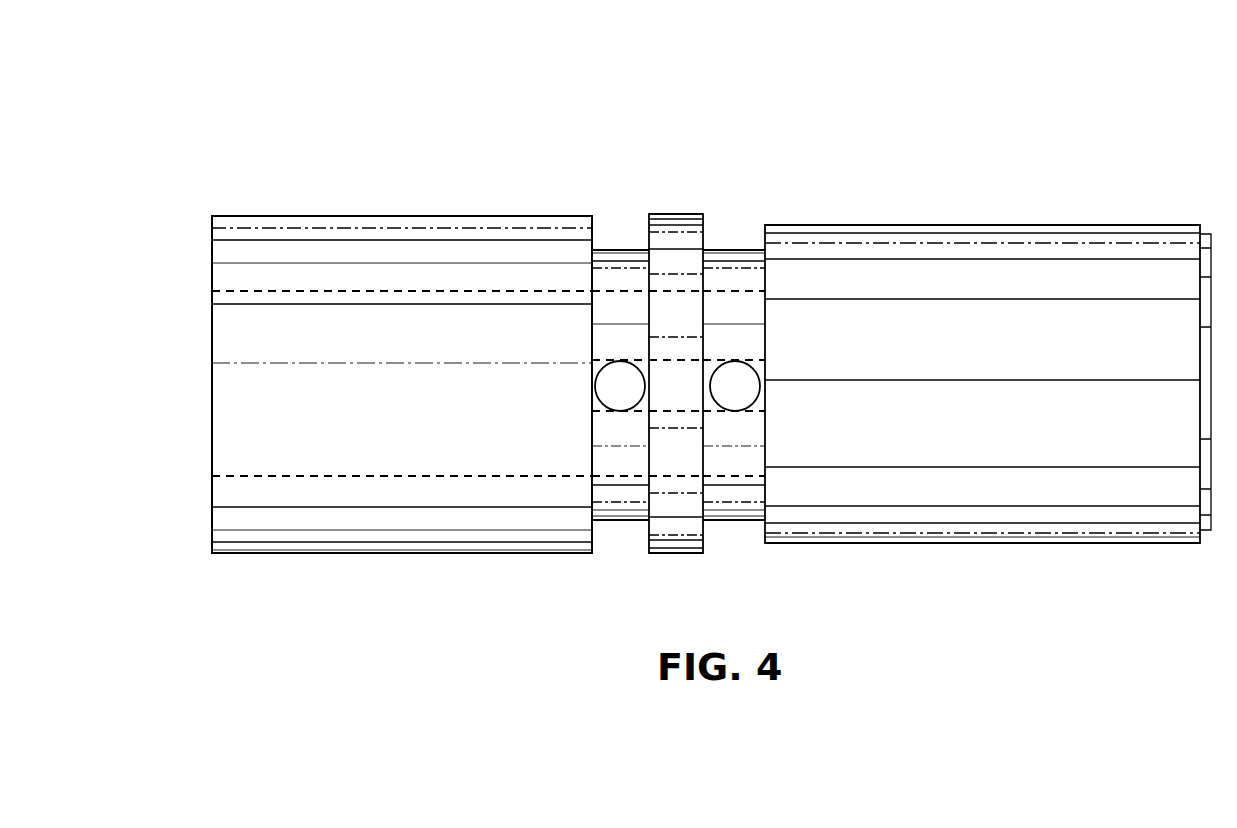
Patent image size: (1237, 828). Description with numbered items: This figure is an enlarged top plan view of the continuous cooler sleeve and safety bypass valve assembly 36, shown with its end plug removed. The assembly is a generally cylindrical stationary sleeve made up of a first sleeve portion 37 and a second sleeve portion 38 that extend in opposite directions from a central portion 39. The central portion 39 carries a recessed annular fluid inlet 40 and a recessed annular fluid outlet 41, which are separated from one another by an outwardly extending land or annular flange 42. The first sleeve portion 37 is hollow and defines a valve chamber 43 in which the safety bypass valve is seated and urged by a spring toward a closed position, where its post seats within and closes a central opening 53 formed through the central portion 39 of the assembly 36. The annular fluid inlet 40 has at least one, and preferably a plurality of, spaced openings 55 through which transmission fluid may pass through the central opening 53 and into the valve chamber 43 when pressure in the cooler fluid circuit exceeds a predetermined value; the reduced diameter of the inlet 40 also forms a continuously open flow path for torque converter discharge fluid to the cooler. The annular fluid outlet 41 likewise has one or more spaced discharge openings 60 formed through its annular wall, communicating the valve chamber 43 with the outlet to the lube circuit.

The continuous cooler sleeve and safety bypass valve assembly 36 is at (994, 172).
The first sleeve portion 37 is at (403, 215).
The second sleeve portion 38 is at (1107, 247).
The central portion 39 is at (660, 586).
The recessed annular fluid inlet 40 is at (727, 252).
The recessed annular fluid outlet 41 is at (612, 256).
The annular flange 42 is at (673, 228).
The valve chamber 43 is at (444, 392).
The central opening 53 is at (712, 361).
The spaced openings 55 is at (737, 389).
The discharge openings 60 is at (617, 386).